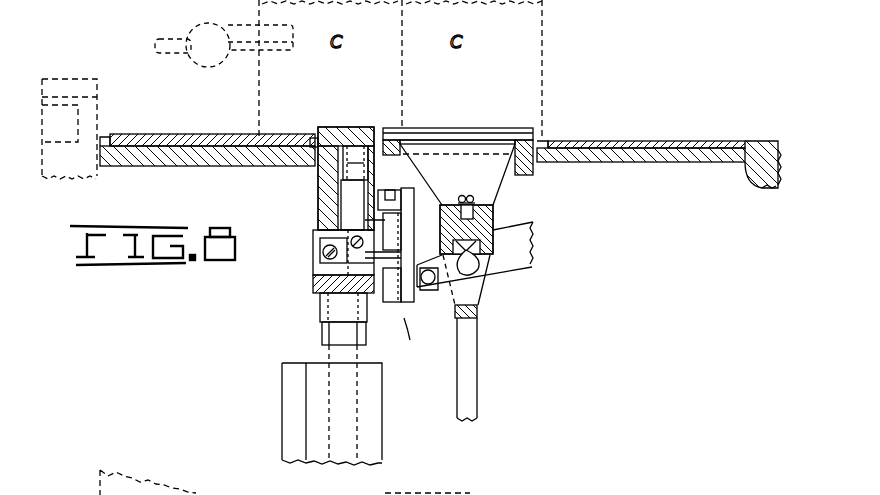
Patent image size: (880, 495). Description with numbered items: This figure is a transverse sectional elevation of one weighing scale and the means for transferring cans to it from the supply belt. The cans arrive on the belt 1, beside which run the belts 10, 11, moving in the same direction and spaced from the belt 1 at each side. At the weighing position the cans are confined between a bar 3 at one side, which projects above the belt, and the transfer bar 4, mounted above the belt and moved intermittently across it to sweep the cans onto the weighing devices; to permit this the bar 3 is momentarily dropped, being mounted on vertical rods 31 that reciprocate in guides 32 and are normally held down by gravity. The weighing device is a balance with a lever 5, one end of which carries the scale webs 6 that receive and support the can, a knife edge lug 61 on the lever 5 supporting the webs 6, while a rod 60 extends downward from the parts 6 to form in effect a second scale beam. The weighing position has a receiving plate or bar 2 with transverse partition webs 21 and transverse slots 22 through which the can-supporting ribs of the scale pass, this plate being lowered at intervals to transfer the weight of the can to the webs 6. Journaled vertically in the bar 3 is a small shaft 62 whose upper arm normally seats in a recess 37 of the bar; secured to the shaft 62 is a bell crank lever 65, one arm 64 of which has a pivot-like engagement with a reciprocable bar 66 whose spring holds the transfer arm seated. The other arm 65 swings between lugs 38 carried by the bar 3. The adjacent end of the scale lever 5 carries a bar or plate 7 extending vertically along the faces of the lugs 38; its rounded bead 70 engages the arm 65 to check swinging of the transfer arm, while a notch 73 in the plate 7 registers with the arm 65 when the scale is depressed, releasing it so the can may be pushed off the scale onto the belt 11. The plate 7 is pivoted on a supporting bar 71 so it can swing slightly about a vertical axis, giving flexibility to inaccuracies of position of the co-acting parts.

The belt 1 is at (186, 136).
The receiving plate or bar 2 is at (533, 163).
The bar 3 is at (320, 191).
The transfer bar 4 is at (190, 37).
The lever 5 is at (528, 268).
The scale webs 6 is at (457, 174).
The bar or plate 7 is at (400, 300).
The belt 10 is at (668, 143).
The belt 11 is at (298, 226).
The transverse partition webs 21 is at (487, 132).
The transverse slots 22 is at (437, 141).
The vertical rods 31 is at (333, 352).
The guides 32 is at (370, 423).
The recess 37 is at (356, 150).
The lugs 38 is at (378, 228).
The rod 60 is at (478, 365).
The knife edge lug 61 is at (470, 265).
The small shaft 62 is at (355, 207).
The arm 64 is at (313, 275).
The bell crank lever 65 is at (377, 256).
The reciprocable bar 66 is at (322, 257).
The bead 70 is at (406, 333).
The supporting bar 71 is at (428, 286).
The notch 73 is at (383, 196).